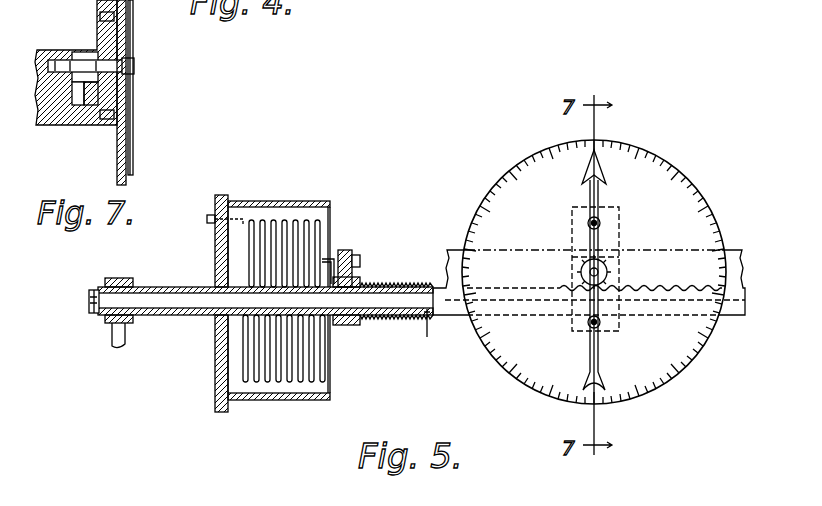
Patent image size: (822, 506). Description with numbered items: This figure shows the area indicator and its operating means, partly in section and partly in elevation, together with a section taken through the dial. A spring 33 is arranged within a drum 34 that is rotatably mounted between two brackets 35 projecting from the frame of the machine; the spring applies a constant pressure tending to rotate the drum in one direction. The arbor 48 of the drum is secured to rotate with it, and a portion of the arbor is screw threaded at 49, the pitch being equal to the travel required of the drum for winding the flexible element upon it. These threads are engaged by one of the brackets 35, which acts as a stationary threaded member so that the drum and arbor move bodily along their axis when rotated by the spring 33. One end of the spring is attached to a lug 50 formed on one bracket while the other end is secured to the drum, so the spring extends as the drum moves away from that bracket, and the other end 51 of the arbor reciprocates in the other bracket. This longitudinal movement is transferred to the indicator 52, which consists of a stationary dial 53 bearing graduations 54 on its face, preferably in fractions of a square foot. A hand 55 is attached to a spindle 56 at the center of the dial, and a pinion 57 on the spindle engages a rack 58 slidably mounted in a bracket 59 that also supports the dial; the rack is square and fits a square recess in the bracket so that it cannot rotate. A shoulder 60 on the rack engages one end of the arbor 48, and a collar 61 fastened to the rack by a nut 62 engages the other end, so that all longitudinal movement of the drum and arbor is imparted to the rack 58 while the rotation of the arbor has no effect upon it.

In FIG. 7, the spring 33 is at (316, 233).
In FIG. 7, the drum 34 is at (293, 201).
In FIG. 7, the brackets 35 is at (114, 326).
In FIG. 7, the arbor 48 is at (382, 287).
In FIG. 7, the screw thread 49 is at (411, 287).
In FIG. 7, the lug 50 is at (351, 260).
In FIG. 7, the other end of the arbor 51 is at (176, 287).
In FIG. 4, the indicator 52 is at (151, 87).
In FIG. 5, the indicator 52 is at (594, 272).
In FIG. 4, the dial 53 is at (119, 152).
In FIG. 5, the dial 53 is at (662, 353).
In FIG. 5, the graduations 54 is at (723, 203).
In FIG. 4, the hand 55 is at (134, 30).
In FIG. 5, the hand 55 is at (600, 192).
In FIG. 4, the spindle 56 is at (136, 64).
In FIG. 5, the spindle 56 is at (580, 272).
In FIG. 4, the pinion 57 is at (80, 53).
In FIG. 5, the pinion 57 is at (612, 262).
In FIG. 4, the rack 58 is at (88, 122).
In FIG. 5, the rack 58 is at (668, 290).
In FIG. 4, the bracket 59 is at (99, 24).
In FIG. 5, the bracket 59 is at (578, 322).
In FIG. 7, the shoulder 60 is at (432, 338).
In FIG. 7, the collar 61 is at (99, 290).
In FIG. 7, the nut 62 is at (94, 312).